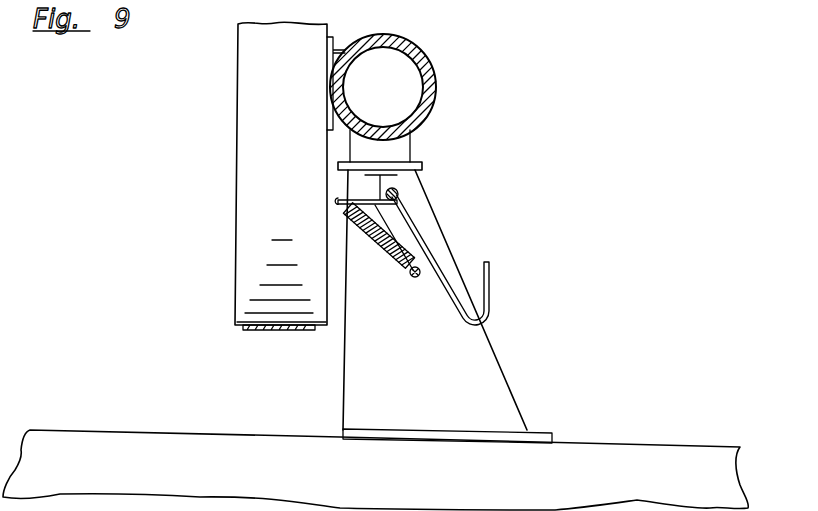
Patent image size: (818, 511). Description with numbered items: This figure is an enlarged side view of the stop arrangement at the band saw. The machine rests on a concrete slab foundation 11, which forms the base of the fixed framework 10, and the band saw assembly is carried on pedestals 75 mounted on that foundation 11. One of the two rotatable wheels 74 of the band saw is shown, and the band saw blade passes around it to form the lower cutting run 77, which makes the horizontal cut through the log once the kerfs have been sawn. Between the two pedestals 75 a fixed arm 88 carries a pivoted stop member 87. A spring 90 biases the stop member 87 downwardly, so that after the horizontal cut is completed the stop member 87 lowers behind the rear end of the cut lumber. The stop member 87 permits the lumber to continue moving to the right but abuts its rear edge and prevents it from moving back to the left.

The fixed framework 10 is at (627, 428).
The concrete slab foundation 11 is at (635, 476).
The rotatable wheel 74 is at (238, 193).
The pedestal 75 is at (427, 365).
The lower cutting run 77 is at (262, 326).
The pivoted stop member 87 is at (489, 300).
The fixed arm 88 is at (380, 186).
The spring 90 is at (392, 258).